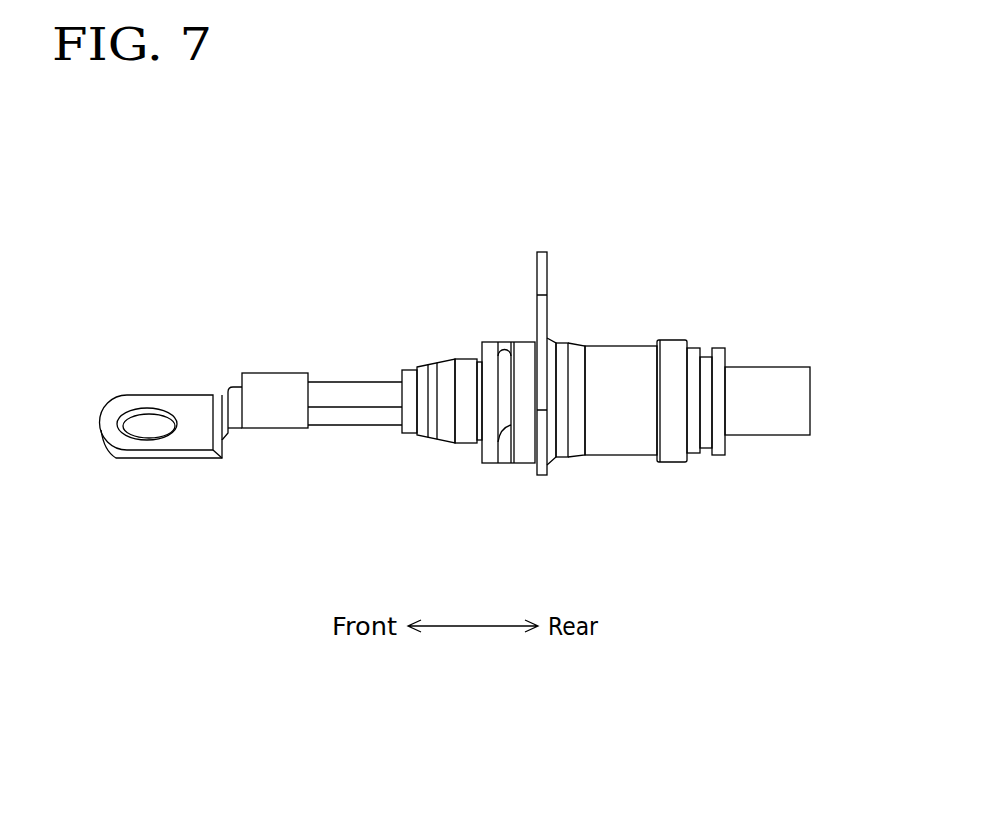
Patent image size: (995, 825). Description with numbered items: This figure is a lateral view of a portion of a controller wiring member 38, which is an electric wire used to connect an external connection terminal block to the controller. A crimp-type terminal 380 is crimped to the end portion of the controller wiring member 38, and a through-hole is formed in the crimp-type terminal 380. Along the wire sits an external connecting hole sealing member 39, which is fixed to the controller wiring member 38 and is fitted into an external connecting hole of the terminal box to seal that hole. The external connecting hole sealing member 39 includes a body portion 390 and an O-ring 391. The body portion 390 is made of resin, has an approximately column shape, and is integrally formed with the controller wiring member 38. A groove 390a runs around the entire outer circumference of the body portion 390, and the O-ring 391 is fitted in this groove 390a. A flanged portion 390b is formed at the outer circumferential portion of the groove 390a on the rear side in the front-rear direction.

The controller wiring member 38 is at (357, 382).
The external connecting hole sealing member 39 is at (606, 349).
The crimp-type terminal 380 is at (180, 405).
The body portion 390 is at (603, 357).
The groove 390a is at (501, 440).
The flanged portion 390b is at (548, 267).
The O-ring 391 is at (505, 382).